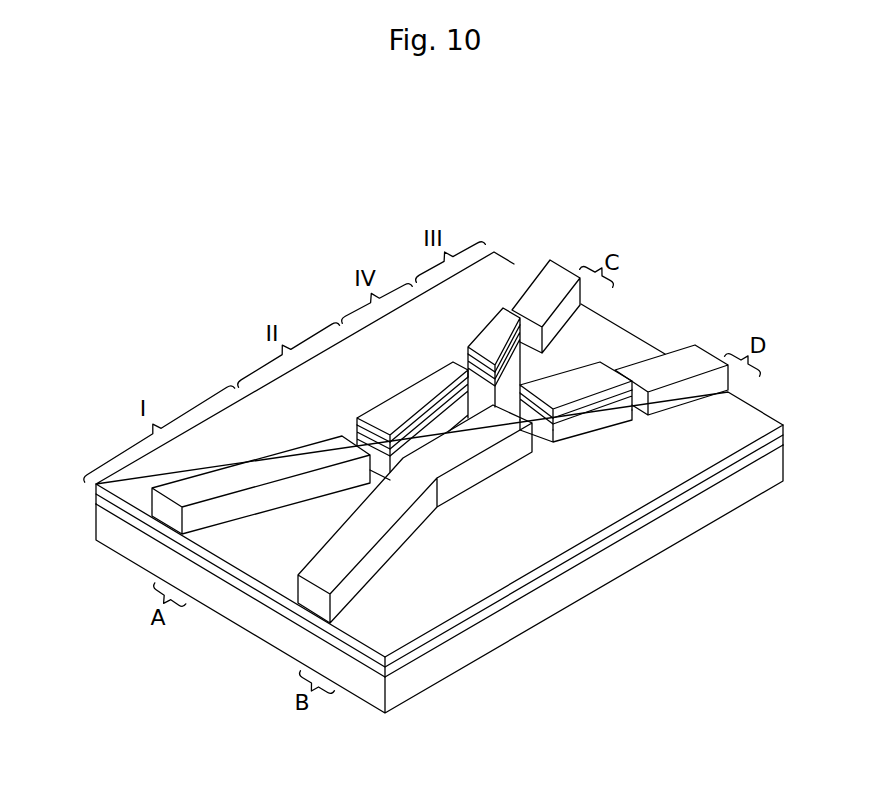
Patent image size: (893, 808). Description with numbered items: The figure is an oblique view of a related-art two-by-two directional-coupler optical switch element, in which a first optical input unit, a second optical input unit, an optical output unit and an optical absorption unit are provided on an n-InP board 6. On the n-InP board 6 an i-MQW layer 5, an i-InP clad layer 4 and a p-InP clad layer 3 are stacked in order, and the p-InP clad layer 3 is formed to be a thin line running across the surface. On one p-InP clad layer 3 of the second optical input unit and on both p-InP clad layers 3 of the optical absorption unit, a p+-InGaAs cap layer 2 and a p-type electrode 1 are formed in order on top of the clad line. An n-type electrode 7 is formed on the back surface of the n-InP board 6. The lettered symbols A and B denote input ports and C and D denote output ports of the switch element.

The p-type electrode 1 is at (410, 397).
The p+-InGaAs cap layer 2 is at (357, 430).
The p-InP clad layer 3 is at (267, 505).
The i-InP clad layer 4 is at (97, 485).
The i-MQW layer 5 is at (97, 495).
The n-InP board 6 is at (98, 525).
The n-type electrode 7 is at (97, 538).